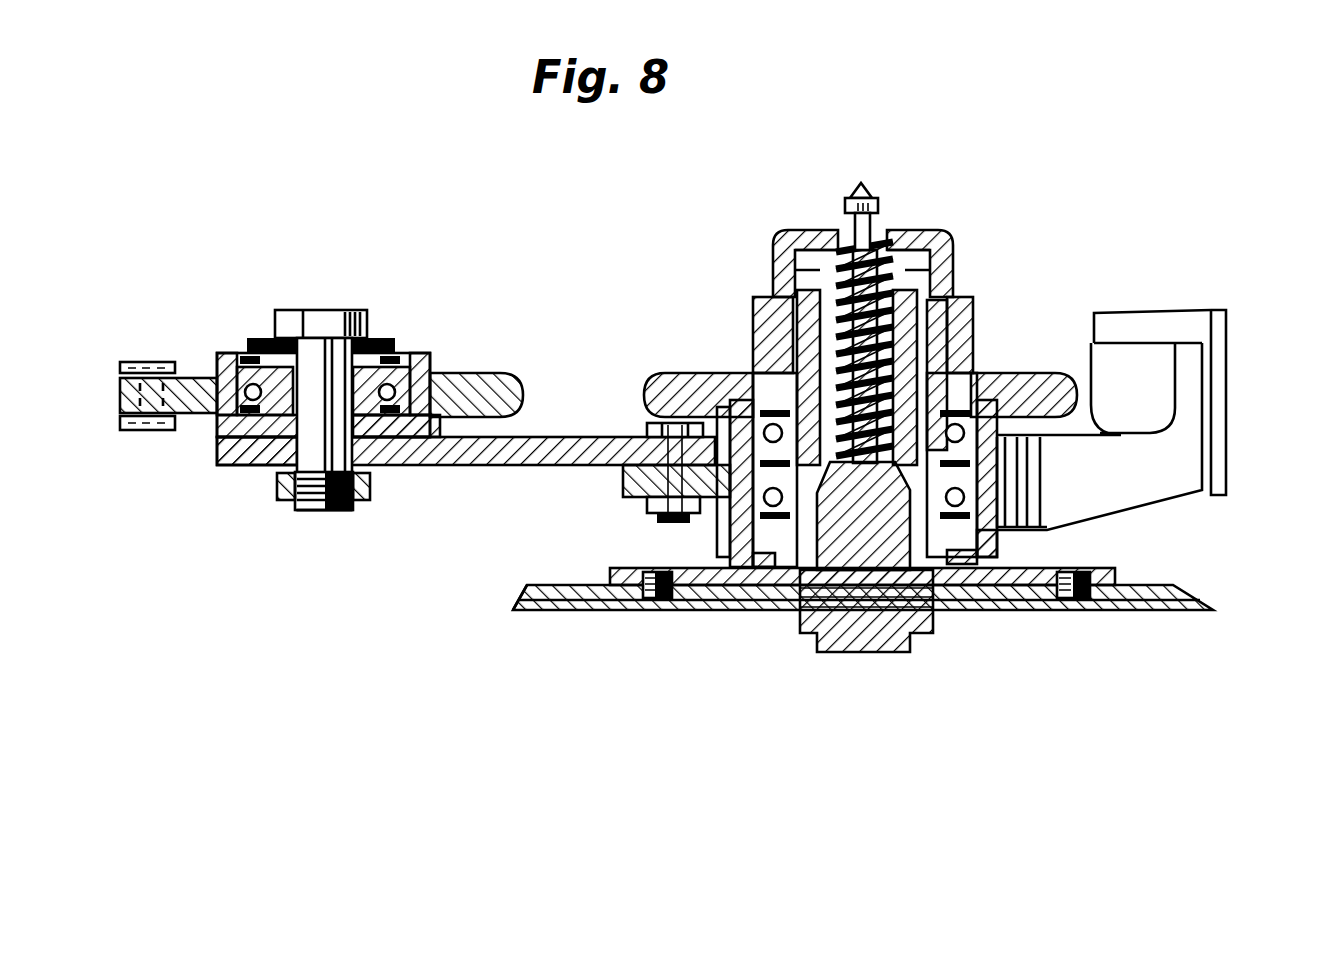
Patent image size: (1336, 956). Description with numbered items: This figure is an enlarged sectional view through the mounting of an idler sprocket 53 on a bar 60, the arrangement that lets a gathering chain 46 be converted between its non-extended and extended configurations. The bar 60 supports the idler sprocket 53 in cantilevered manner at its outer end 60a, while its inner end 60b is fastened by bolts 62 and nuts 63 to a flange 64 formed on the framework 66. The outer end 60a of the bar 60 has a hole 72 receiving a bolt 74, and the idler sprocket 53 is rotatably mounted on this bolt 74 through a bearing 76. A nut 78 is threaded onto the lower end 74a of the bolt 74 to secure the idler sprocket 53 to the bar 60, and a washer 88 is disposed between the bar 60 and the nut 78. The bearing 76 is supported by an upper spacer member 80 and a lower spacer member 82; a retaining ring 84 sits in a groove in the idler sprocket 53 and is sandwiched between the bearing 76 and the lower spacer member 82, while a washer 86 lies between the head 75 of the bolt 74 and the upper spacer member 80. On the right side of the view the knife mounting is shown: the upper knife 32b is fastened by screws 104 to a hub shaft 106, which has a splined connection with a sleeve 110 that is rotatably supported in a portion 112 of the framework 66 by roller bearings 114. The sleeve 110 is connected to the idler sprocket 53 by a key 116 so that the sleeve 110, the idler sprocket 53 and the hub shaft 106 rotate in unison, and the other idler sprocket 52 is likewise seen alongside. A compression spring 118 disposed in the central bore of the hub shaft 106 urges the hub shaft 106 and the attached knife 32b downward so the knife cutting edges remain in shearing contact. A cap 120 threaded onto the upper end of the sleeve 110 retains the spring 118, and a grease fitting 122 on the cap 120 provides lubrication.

The upper knife 32b is at (525, 612).
The gathering chain 46 is at (138, 432).
The idler sprocket 52 is at (705, 372).
The idler sprocket 53 is at (455, 373).
The bar 60 is at (458, 468).
The outer end 60a is at (250, 441).
The inner end 60b is at (628, 470).
The bolt 62 is at (652, 432).
The nut 63 is at (705, 515).
The flange 64 is at (640, 502).
The framework 66 is at (1226, 428).
The hole 72 is at (380, 468).
The bolt 74 is at (343, 312).
The lower end 74a is at (320, 512).
The head 75 is at (352, 318).
The bearing 76 is at (260, 352).
The nut 78 is at (290, 492).
The upper spacer member 80 is at (378, 340).
The lower spacer member 82 is at (278, 496).
The retaining ring 84 is at (225, 420).
The washer 86 is at (261, 340).
The washer 88 is at (373, 480).
The screw 104 is at (660, 612).
The hub shaft 106 is at (875, 654).
The sleeve 110 is at (810, 240).
The portion of framework 112 is at (1000, 538).
The roller bearing 114 is at (1005, 492).
The key 116 is at (970, 356).
The compression spring 118 is at (885, 245).
The cap 120 is at (942, 236).
The grease fitting 122 is at (863, 196).